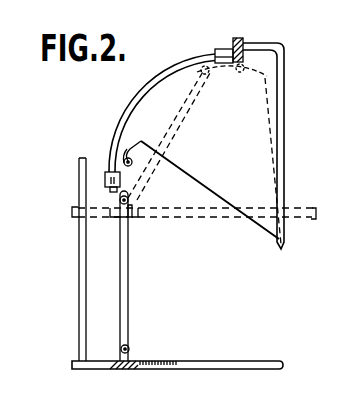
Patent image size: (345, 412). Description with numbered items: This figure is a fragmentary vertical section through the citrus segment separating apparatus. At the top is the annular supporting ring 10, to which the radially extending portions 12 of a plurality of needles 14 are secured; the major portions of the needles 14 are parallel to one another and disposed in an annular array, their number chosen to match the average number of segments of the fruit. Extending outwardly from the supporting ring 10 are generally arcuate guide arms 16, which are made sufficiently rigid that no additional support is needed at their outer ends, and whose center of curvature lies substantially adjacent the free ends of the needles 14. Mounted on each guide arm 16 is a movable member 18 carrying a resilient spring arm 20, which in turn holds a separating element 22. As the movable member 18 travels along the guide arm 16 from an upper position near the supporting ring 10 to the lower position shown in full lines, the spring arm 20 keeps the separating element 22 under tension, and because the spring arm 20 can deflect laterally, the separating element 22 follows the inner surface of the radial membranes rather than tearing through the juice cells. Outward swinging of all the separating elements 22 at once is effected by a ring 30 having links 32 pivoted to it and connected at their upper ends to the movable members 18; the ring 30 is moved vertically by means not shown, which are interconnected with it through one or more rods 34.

The annular supporting ring 10 is at (240, 39).
The radially extending portion 12 is at (268, 43).
The needle 14 is at (285, 74).
The guide arm 16 is at (139, 93).
The movable member 18 is at (105, 180).
The spring arm 20 is at (130, 150).
The separating element 22 is at (207, 186).
The ring 30 is at (176, 220).
The link 32 is at (129, 295).
The rod 34 is at (78, 292).